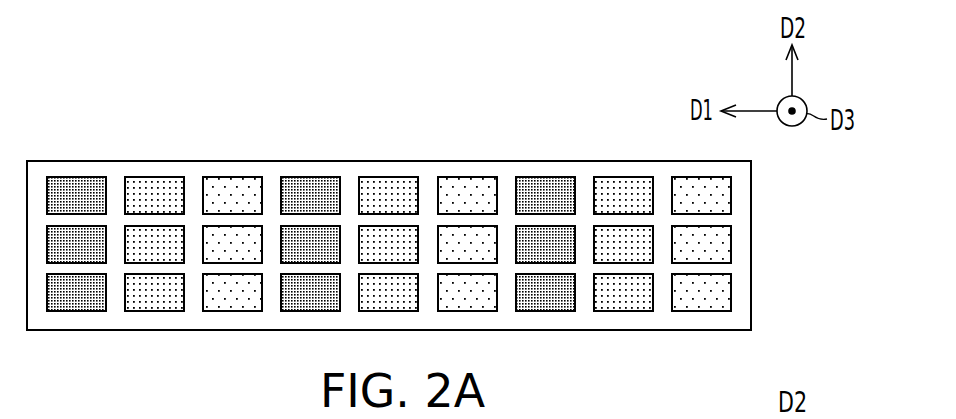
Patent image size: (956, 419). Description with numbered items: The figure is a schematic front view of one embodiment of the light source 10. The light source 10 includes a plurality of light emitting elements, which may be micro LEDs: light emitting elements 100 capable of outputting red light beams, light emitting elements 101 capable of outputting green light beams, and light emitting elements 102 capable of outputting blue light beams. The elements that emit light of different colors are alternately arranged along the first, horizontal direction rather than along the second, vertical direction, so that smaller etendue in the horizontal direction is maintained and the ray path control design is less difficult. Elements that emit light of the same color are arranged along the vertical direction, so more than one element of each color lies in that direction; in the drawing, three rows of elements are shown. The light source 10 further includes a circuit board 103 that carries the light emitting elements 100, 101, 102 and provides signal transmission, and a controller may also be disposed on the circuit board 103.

The light source 10 is at (817, 350).
The light emitting elements 100 is at (75, 188).
The light emitting elements 101 is at (155, 190).
The light emitting elements 102 is at (232, 190).
The circuit board 103 is at (751, 246).